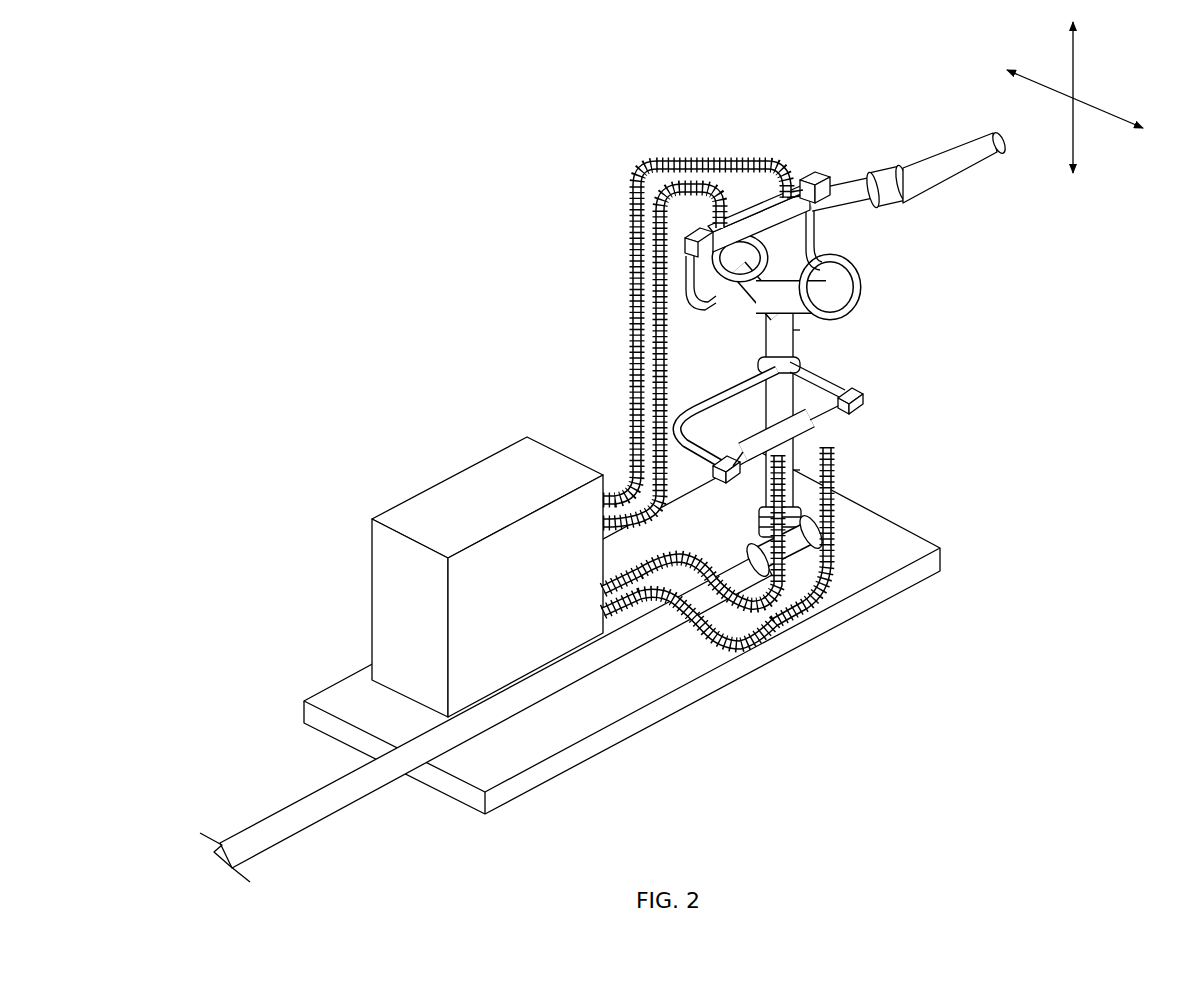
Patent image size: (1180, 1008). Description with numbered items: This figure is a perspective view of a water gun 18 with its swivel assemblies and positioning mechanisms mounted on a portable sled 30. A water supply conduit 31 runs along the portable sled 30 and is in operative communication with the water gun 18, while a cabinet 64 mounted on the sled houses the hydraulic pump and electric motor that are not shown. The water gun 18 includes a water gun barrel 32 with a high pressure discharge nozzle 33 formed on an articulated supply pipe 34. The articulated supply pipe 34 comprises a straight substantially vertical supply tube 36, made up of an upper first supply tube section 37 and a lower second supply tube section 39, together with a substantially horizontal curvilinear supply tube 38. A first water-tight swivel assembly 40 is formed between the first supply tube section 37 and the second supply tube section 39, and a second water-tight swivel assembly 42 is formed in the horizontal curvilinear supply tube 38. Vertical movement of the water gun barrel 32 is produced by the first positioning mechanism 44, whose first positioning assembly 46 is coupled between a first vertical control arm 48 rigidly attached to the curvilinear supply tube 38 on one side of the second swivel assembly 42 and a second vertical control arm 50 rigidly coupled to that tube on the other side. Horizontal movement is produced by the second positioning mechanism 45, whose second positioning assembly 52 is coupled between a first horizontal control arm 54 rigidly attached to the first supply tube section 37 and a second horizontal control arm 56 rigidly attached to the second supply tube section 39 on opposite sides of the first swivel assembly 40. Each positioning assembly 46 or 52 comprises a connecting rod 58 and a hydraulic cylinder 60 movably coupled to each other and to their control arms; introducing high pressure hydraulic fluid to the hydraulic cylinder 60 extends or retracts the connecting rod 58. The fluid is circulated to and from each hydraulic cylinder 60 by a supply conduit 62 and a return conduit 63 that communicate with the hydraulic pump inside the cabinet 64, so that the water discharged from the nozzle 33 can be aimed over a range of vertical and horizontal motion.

The water gun 18 is at (462, 368).
The portable sled 30 is at (697, 695).
The water supply conduit 31 is at (327, 804).
The water gun barrel 32 is at (872, 212).
The high pressure discharge nozzle 33 is at (1000, 132).
The articulated supply pipe 34 is at (852, 348).
The straight substantially vertical supply tube 36 is at (763, 497).
The first supply tube section 37 is at (800, 345).
The substantially horizontal curvilinear supply tube 38 is at (838, 315).
The second supply tube section 39 is at (790, 483).
The first water-tight swivel assembly 40 is at (765, 370).
The second water-tight swivel assembly 42 is at (828, 250).
The first positioning mechanism 44 is at (785, 145).
The second positioning mechanism 45 is at (870, 458).
The first positioning assembly 46 is at (750, 213).
The first vertical control arm 48 is at (822, 228).
The second vertical control arm 50 is at (693, 285).
The second positioning assembly 52 is at (793, 477).
The first horizontal control arm 54 is at (838, 385).
The second horizontal control arm 56 is at (690, 470).
The connecting rod 58 is at (808, 175).
The hydraulic cylinder 60 is at (780, 188).
The supply conduit 62 is at (637, 340).
The return conduit 63 is at (658, 400).
The cabinet 64 is at (468, 485).